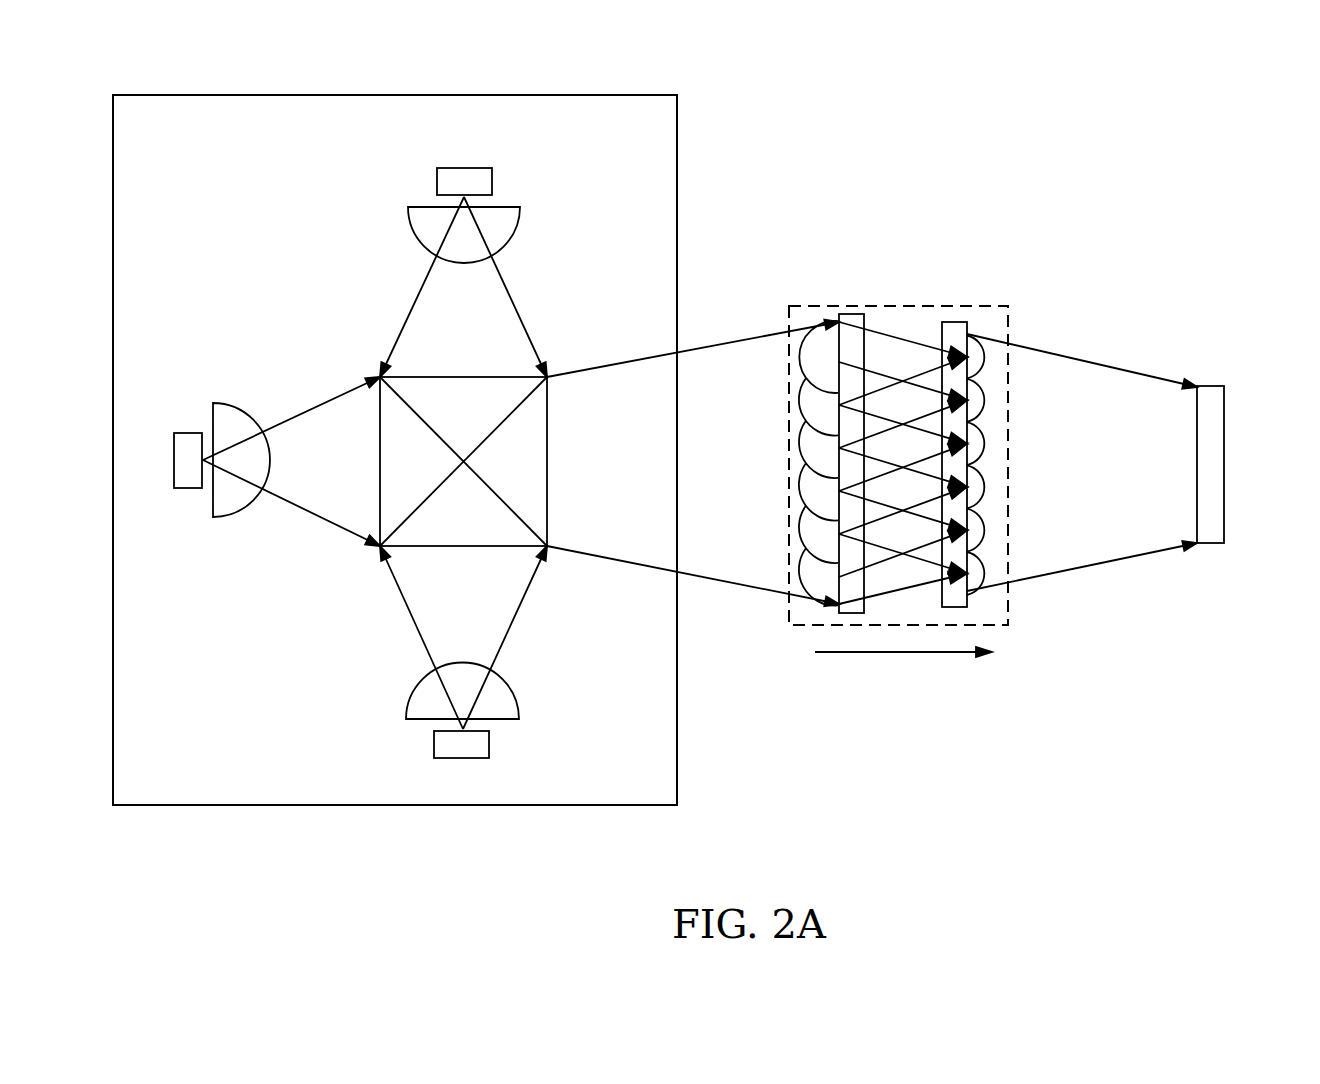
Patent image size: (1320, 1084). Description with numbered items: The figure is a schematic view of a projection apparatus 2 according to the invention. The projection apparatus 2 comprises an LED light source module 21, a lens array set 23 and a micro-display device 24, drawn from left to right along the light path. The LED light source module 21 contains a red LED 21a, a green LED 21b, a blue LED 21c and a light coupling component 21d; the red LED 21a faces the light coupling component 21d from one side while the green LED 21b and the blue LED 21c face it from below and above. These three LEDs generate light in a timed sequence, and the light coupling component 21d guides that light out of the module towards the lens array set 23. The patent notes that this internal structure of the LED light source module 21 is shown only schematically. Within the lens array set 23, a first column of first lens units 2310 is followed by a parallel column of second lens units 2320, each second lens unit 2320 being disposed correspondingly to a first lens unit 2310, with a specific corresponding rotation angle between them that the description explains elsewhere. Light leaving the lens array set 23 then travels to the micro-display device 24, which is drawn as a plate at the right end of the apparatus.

The projection apparatus 2 is at (1054, 124).
The LED light source module 21 is at (677, 174).
The red LED 21a is at (185, 447).
The green LED 21b is at (462, 746).
The blue LED 21c is at (465, 177).
The light coupling component 21d is at (547, 435).
The lens array set 23 is at (896, 306).
The first lens unit 2310 is at (805, 355).
The second lens unit 2320 is at (995, 360).
The micro-display device 24 is at (1224, 463).